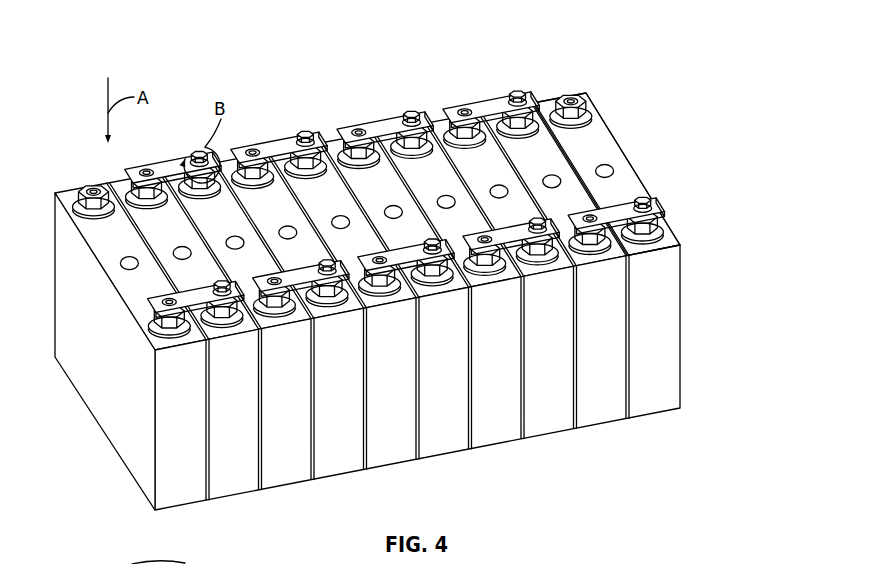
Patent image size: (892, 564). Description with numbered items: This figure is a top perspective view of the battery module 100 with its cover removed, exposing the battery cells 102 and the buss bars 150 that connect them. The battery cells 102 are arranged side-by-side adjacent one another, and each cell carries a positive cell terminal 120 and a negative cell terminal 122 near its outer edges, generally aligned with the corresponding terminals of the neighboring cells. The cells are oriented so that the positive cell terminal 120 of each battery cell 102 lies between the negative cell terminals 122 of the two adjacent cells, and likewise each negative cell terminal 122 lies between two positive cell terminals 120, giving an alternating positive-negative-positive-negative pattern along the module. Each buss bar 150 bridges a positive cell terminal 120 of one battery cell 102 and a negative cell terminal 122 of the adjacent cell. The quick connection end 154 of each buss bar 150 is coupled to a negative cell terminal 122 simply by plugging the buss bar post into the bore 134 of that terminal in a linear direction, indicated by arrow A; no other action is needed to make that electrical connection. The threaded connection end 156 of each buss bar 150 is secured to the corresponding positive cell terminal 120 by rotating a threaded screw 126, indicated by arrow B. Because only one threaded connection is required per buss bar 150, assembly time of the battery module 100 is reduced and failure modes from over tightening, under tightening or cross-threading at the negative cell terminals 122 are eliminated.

The battery module 100 is at (318, 99).
The battery cell 102 is at (602, 138).
The positive cell terminal 120 is at (675, 228).
The negative cell terminal 122 is at (615, 250).
The threaded screw 126 is at (520, 98).
The bore 134 is at (573, 93).
The buss bar 150 is at (490, 112).
The quick connection end 154 is at (459, 103).
The threaded connection end 156 is at (530, 89).